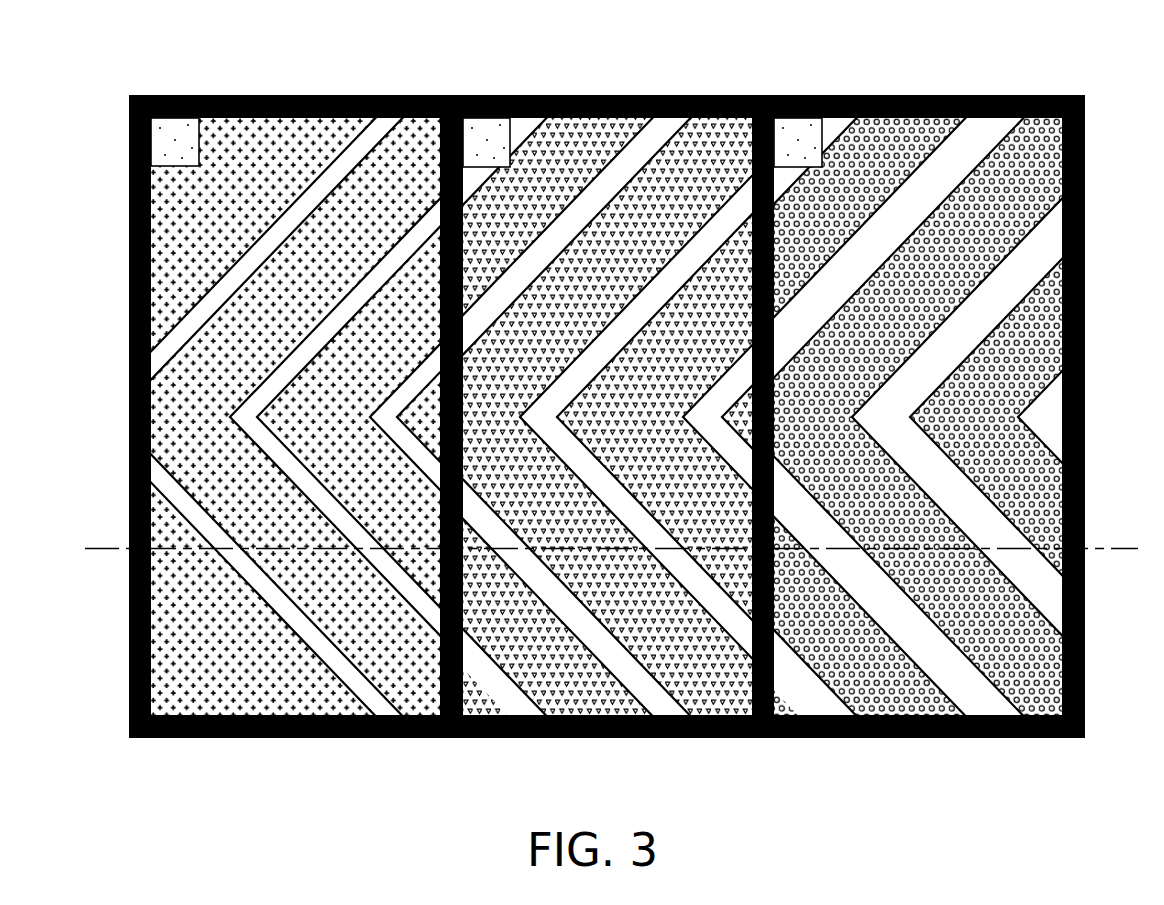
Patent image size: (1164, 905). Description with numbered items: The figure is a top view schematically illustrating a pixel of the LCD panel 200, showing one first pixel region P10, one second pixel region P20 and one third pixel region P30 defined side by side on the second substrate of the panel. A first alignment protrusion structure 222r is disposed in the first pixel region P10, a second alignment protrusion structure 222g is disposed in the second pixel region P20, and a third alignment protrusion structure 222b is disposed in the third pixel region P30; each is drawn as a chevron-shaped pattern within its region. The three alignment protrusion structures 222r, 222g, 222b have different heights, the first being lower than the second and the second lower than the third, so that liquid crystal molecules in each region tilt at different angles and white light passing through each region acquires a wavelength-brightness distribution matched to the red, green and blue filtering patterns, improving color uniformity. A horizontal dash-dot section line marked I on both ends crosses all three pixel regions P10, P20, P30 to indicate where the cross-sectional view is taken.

The LCD panel 200 is at (1159, 747).
The first pixel region P10 is at (402, 417).
The second pixel region P20 is at (631, 417).
The third pixel region P30 is at (837, 417).
The first alignment protrusion structure 222r is at (413, 237).
The second alignment protrusion structure 222g is at (550, 237).
The third alignment protrusion structure 222b is at (908, 212).
The section line I- I is at (90, 562).